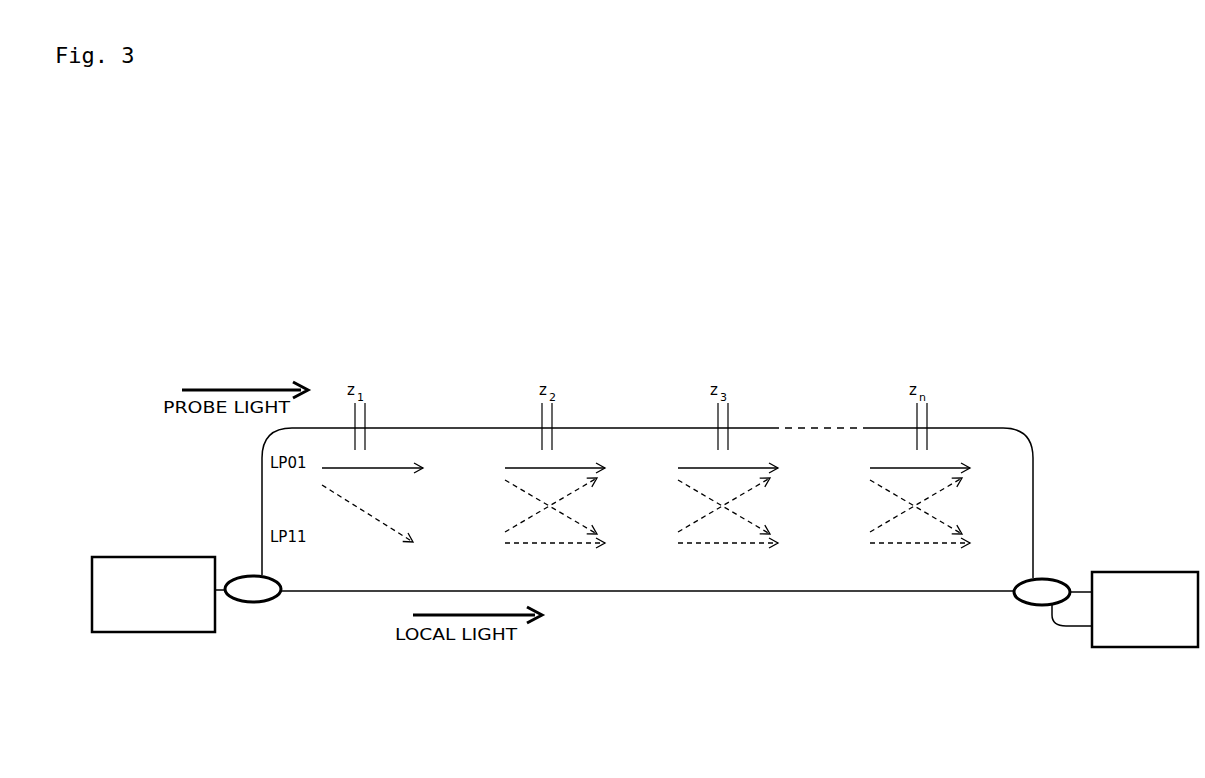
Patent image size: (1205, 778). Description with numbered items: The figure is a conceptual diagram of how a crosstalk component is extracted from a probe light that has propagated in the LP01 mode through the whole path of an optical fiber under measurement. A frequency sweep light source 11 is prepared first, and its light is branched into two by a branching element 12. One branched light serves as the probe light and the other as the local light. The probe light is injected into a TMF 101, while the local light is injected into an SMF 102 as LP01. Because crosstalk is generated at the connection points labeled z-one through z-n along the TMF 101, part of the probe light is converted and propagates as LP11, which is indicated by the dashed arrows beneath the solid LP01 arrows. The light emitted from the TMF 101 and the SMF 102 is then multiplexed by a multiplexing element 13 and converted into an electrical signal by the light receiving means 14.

The frequency sweep light source 11 is at (163, 557).
The branching element 12 is at (260, 603).
The multiplexing element 13 is at (1016, 600).
The light receiving means 14 is at (1144, 568).
The TMF 101 is at (952, 428).
The SMF 102 is at (733, 593).